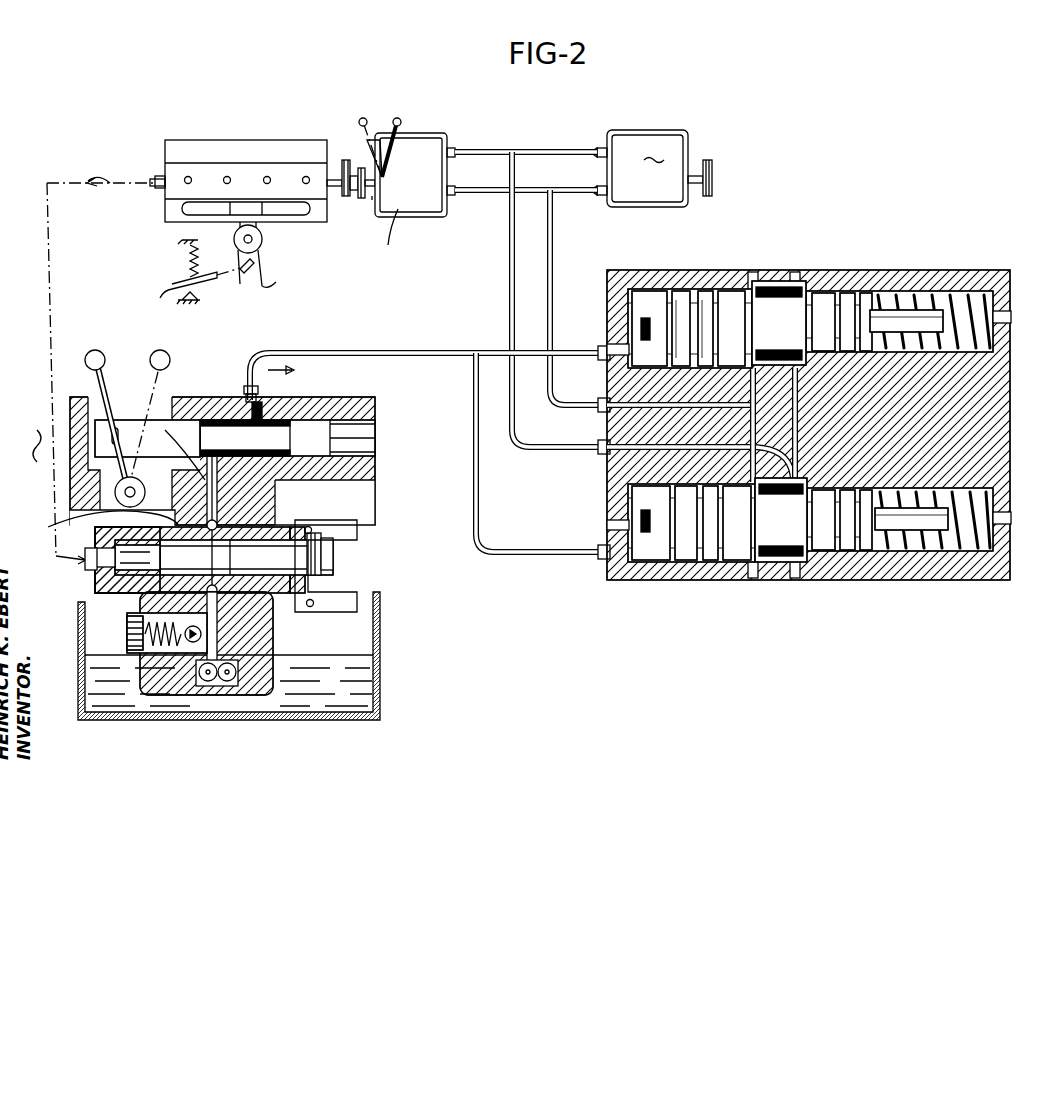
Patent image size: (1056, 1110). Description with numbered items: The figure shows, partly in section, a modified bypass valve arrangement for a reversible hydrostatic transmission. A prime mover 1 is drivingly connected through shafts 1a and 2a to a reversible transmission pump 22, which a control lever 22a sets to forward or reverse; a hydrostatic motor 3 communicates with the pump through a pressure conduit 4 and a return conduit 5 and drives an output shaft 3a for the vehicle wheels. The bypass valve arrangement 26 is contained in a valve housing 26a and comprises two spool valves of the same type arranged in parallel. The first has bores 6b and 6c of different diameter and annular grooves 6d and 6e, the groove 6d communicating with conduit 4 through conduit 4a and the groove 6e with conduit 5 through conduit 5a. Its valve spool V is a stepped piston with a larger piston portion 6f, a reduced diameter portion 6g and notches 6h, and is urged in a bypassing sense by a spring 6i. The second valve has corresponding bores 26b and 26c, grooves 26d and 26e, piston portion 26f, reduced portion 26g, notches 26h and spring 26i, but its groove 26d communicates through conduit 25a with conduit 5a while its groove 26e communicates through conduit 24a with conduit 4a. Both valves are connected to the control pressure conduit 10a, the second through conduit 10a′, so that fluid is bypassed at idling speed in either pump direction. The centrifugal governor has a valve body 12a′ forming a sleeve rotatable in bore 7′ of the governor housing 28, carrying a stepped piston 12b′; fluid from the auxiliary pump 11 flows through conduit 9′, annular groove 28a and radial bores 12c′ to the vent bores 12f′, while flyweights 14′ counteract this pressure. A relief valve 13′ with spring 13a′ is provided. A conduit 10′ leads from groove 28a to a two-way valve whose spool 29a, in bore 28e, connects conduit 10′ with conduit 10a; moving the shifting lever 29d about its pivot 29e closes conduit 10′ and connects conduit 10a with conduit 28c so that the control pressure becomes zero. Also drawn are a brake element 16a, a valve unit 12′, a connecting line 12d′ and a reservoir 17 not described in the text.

The prime mover 1 is at (316, 140).
The shaft 1a is at (346, 167).
The shaft 2a is at (370, 198).
The reversible transmission pump 22 is at (438, 138).
The control lever 22a is at (400, 120).
The hydrostatic motor 3 is at (639, 168).
The output shaft 3a is at (706, 169).
The pressure conduit 4 is at (537, 158).
The return conduit 5 is at (564, 192).
The conduit 4a is at (510, 294).
The conduit 5a is at (555, 317).
The control pressure conduit 10a is at (408, 352).
The conduit 10a′ is at (478, 480).
The bypass valve arrangement 26 is at (918, 252).
The valve housing 26a is at (832, 286).
The piston portion 6f is at (658, 289).
The bore 6b is at (616, 400).
The notches 6h is at (745, 320).
The annular groove 6e is at (755, 286).
The annular groove 6d is at (797, 284).
The reduced diameter portion 6g is at (776, 327).
The valve spool V is at (796, 314).
The spring 6i is at (972, 290).
The bore 6c is at (972, 288).
The conduit 24a is at (761, 425).
The conduit 25a is at (781, 520).
The bore 26b is at (610, 562).
The piston portion 26f is at (660, 560).
The notches 26h is at (750, 536).
The annular groove 26e is at (764, 562).
The reduced diameter portion 26g is at (781, 558).
The annular groove 26d is at (796, 562).
The spring 26i is at (908, 560).
The bore 26c is at (960, 562).
The brake lever 16a is at (260, 288).
The governor housing 28 is at (394, 439).
The bore 28e is at (377, 414).
The conduit 28c is at (345, 478).
The annular groove 28a is at (240, 544).
The spool valve piston 29a is at (287, 429).
The shifting lever 29d is at (92, 394).
The pivot 29e is at (125, 492).
The conduit 10′ is at (147, 438).
The regulating valve 12′ is at (375, 534).
The valve body 12a′ is at (96, 578).
The stepped piston 12b′ is at (128, 570).
The radial bores 12c′ is at (212, 541).
The connecting line 12d′ is at (98, 523).
The radial bores 12f′ is at (127, 560).
The bore 7′ is at (188, 542).
The flyweights 14′ is at (339, 556).
The conduit 9′ is at (260, 648).
The auxiliary pump 11 is at (225, 686).
The relief valve 13′ is at (152, 652).
The spring 13a′ is at (128, 632).
The reservoir 17 is at (375, 666).